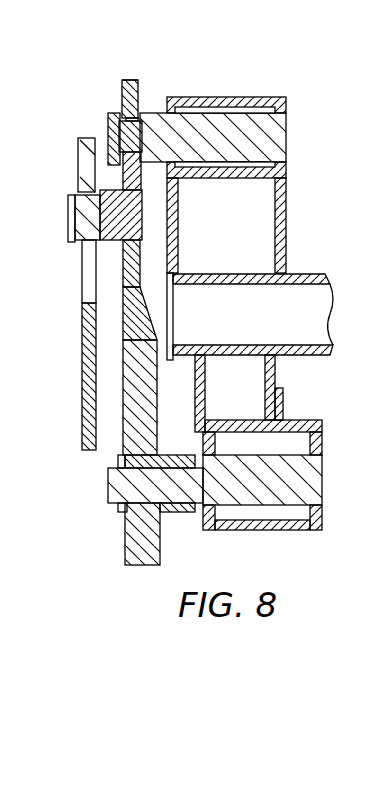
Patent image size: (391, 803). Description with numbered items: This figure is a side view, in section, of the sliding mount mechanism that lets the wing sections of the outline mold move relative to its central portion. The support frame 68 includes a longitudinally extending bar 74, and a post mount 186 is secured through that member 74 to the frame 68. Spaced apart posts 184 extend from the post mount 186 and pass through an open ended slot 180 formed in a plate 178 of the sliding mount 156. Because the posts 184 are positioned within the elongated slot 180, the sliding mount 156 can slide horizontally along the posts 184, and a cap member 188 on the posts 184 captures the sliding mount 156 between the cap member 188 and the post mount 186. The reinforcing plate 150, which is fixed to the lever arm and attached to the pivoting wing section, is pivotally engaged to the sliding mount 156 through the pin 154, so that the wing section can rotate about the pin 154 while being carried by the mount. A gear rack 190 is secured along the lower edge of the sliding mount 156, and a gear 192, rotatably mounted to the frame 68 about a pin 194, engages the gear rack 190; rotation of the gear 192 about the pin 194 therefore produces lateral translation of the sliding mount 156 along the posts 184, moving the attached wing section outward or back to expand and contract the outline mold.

The support frame 68 is at (324, 393).
The longitudinally extending bar 74 is at (288, 192).
The reinforcing plate 150 is at (82, 425).
The pin 154 is at (82, 240).
The sliding mount 156 is at (128, 80).
The plate 178 is at (82, 272).
The open ended slot 180 is at (108, 140).
The post 184 is at (124, 146).
The post mount 186 is at (243, 97).
The cap member 188 is at (122, 86).
The gear rack 190 is at (122, 312).
The gear 192 is at (123, 366).
The pin 194 is at (145, 505).